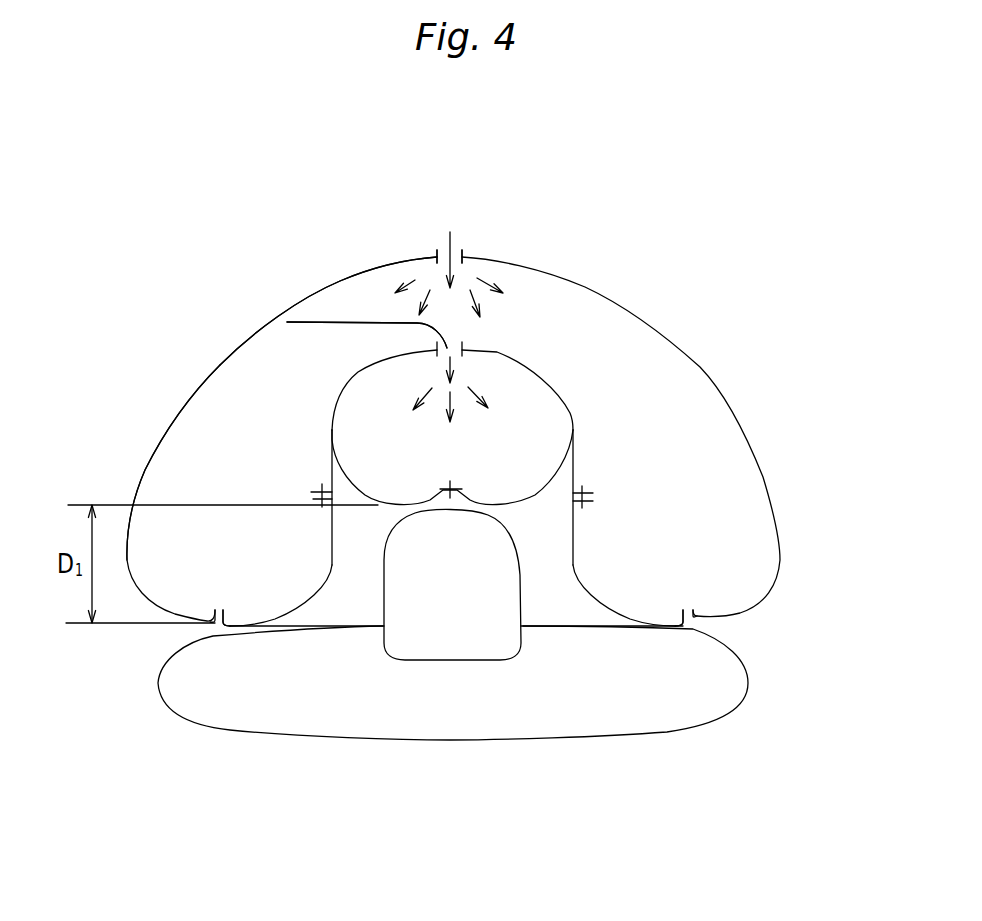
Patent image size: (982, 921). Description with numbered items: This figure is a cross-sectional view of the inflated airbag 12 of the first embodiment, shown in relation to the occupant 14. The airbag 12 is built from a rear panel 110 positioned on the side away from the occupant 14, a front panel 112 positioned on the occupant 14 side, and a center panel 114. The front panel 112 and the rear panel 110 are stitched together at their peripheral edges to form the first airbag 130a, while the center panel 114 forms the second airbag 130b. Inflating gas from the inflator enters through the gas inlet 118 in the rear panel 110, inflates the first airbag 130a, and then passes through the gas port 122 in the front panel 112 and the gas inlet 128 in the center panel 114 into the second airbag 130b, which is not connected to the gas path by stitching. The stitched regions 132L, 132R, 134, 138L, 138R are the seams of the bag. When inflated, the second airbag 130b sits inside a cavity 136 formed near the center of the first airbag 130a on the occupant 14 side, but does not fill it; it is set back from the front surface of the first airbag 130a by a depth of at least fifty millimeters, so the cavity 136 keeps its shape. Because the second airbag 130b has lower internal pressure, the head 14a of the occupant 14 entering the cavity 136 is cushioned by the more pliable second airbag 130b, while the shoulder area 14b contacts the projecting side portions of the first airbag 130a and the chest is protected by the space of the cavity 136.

The airbag 12 is at (326, 270).
The occupant 14 is at (403, 752).
The head 14a is at (473, 647).
The shoulder area 14b is at (203, 712).
The rear panel 110 is at (700, 367).
The front panel 112 is at (618, 612).
The center panel 114 is at (497, 352).
The gas inlet 118 is at (437, 254).
The gas port 122 is at (287, 322).
The gas inlet 128 is at (287, 322).
The first airbag 130a is at (222, 400).
The second airbag 130b is at (541, 419).
The stitched region 132L is at (213, 610).
The stitched region 132R is at (697, 615).
The stitched region 134 is at (456, 487).
The cavity 136 is at (370, 526).
The stitched region 138L is at (320, 507).
The stitched region 138R is at (592, 493).